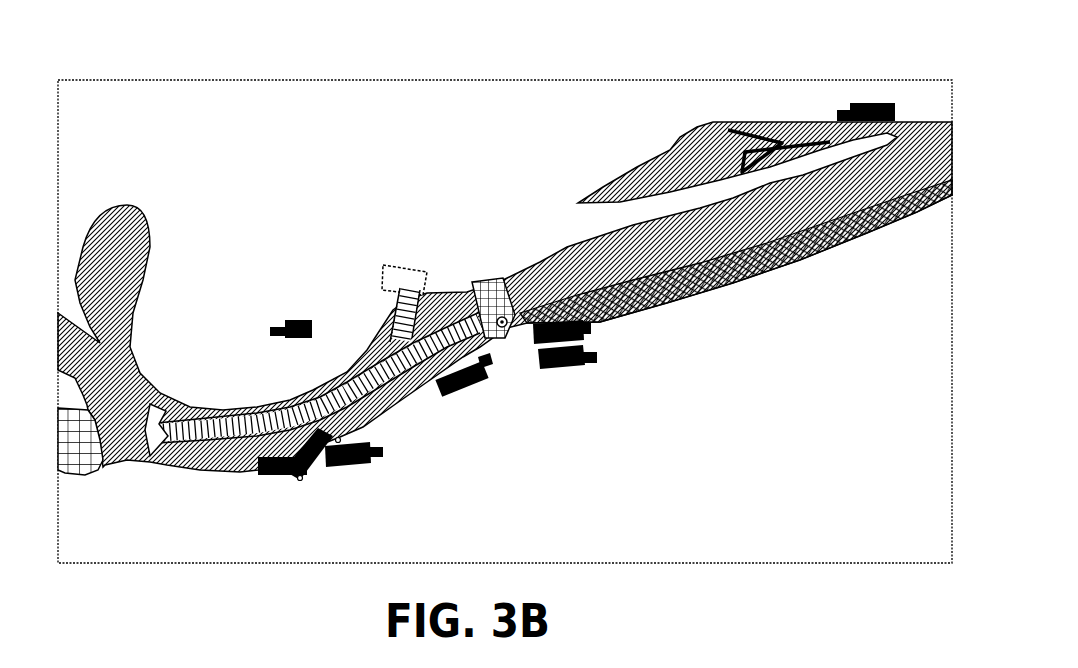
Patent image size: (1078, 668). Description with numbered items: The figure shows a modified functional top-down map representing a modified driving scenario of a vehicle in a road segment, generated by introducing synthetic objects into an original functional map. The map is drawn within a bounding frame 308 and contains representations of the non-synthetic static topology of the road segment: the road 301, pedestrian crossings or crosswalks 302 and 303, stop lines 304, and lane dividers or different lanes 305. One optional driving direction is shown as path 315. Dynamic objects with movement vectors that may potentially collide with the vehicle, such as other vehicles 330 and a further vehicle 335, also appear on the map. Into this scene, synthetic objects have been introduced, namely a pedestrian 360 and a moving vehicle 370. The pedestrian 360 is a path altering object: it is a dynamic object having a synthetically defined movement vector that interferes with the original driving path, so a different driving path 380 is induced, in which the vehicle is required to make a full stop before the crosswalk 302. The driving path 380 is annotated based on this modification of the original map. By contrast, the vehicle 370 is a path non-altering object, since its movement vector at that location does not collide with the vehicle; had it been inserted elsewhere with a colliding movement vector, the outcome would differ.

The road 301 is at (930, 153).
The crosswalk 302 is at (505, 340).
The crosswalk 303 is at (80, 473).
The stop lines 304 is at (163, 470).
The lane 305 is at (902, 222).
The image frame 308 is at (58, 103).
The path 315 is at (380, 297).
The vehicles 330 is at (280, 475).
The marker 335 is at (345, 470).
The pedestrian 360 is at (508, 328).
The vehicle 370 is at (323, 477).
The driving path 380 is at (447, 290).